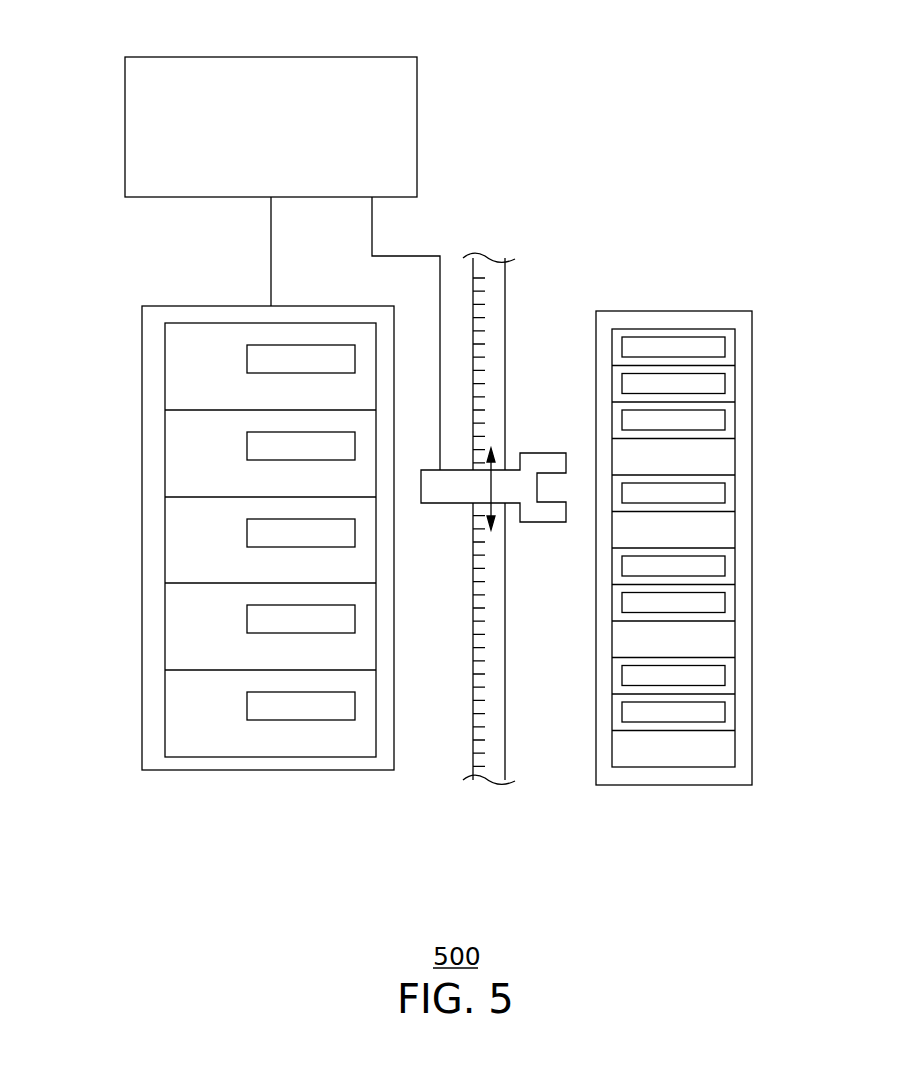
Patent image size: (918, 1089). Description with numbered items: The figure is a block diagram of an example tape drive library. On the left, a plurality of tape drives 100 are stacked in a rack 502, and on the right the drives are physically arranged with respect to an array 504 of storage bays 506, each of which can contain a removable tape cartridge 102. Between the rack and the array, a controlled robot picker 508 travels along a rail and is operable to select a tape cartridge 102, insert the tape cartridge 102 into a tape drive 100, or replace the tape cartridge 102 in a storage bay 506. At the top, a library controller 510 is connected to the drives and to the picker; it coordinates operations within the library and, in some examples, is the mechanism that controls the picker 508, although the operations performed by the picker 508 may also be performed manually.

The tape drive 100 is at (165, 445).
The tape cartridge 102 is at (650, 337).
The rack 502 is at (142, 523).
The array 504 is at (752, 677).
The storage bay 506 is at (735, 600).
The robot picker 508 is at (537, 453).
The library controller 510 is at (160, 57).